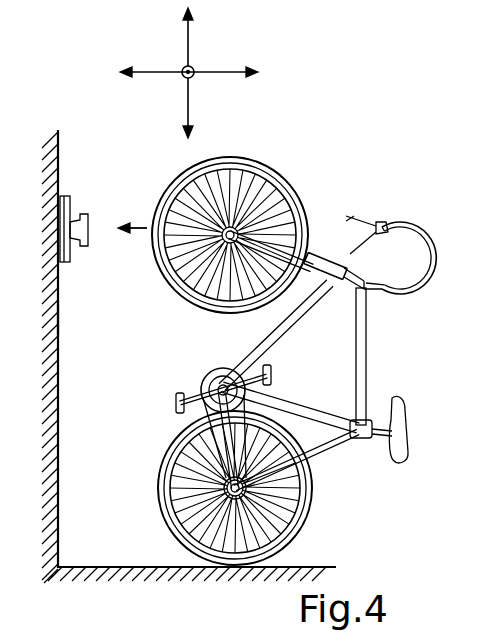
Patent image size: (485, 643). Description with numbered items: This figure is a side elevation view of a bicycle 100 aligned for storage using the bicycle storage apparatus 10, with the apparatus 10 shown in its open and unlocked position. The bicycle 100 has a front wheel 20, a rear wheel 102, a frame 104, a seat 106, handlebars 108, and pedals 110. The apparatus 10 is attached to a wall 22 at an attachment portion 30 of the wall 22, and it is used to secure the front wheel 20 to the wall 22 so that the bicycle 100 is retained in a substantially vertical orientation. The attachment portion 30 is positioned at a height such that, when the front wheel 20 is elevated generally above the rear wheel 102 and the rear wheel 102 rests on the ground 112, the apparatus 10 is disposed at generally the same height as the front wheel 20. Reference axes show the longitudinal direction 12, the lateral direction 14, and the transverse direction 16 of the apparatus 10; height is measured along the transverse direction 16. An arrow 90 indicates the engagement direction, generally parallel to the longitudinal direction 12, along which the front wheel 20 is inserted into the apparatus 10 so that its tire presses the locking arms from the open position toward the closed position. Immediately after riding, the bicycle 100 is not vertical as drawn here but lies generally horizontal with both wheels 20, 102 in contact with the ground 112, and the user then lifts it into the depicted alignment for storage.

The bicycle storage apparatus 10 is at (62, 200).
The longitudinal direction 12 is at (212, 70).
The lateral direction 14 is at (182, 78).
The transverse direction 16 is at (185, 52).
The front wheel 20 is at (237, 157).
The wall 22 is at (70, 348).
The attachment portion 30 is at (60, 316).
The arrow 90 is at (143, 232).
The bicycle 100 is at (341, 148).
The rear wheel 102 is at (312, 512).
The frame 104 is at (368, 366).
The seat 106 is at (395, 462).
The handlebars 108 is at (400, 222).
The pedals 110 is at (264, 366).
The ground 112 is at (143, 566).